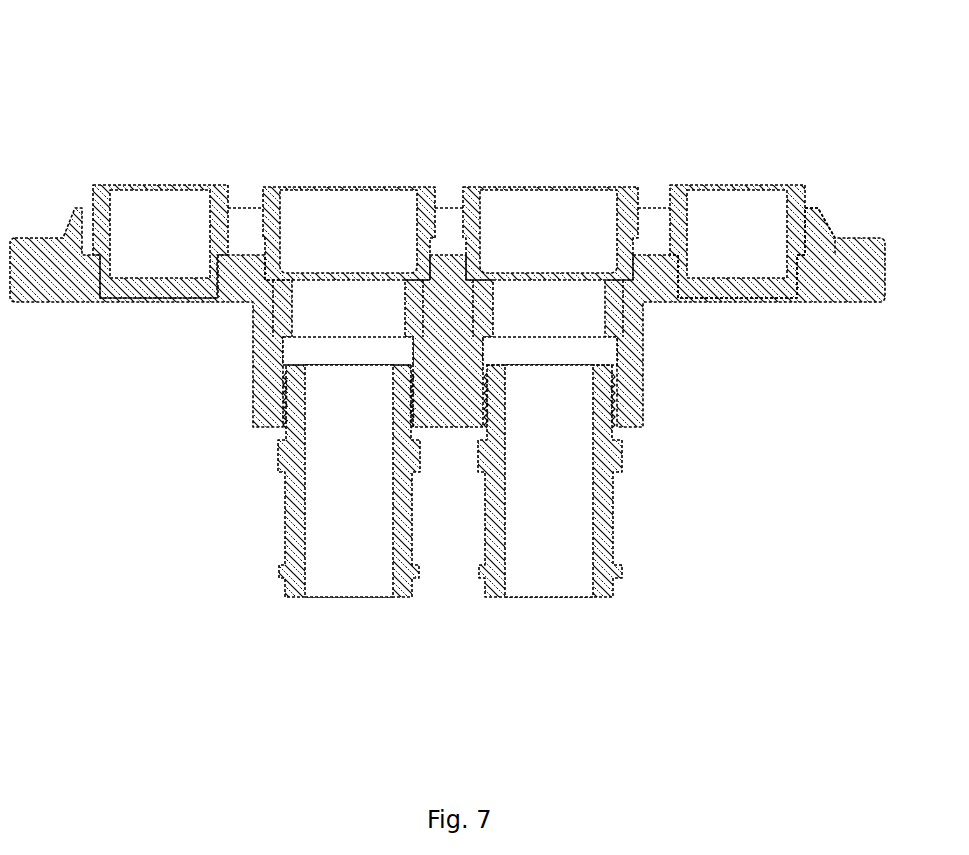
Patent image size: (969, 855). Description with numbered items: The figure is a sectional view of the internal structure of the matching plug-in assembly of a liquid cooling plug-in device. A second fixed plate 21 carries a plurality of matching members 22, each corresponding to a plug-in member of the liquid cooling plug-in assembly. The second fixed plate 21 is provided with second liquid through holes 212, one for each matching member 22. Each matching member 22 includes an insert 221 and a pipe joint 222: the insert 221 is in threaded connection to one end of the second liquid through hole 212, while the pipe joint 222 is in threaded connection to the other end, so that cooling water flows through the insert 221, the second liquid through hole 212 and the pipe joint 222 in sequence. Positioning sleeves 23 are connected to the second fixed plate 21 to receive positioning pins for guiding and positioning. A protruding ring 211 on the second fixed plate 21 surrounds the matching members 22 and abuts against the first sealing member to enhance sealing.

The second fixed plate 21 is at (872, 238).
The protruding ring 211 is at (823, 208).
The second liquid through hole 212 is at (335, 347).
The matching member 22 is at (450, 403).
The insert 221 is at (285, 512).
The pipe joint 222 is at (277, 189).
The positioning sleeve 23 is at (107, 187).